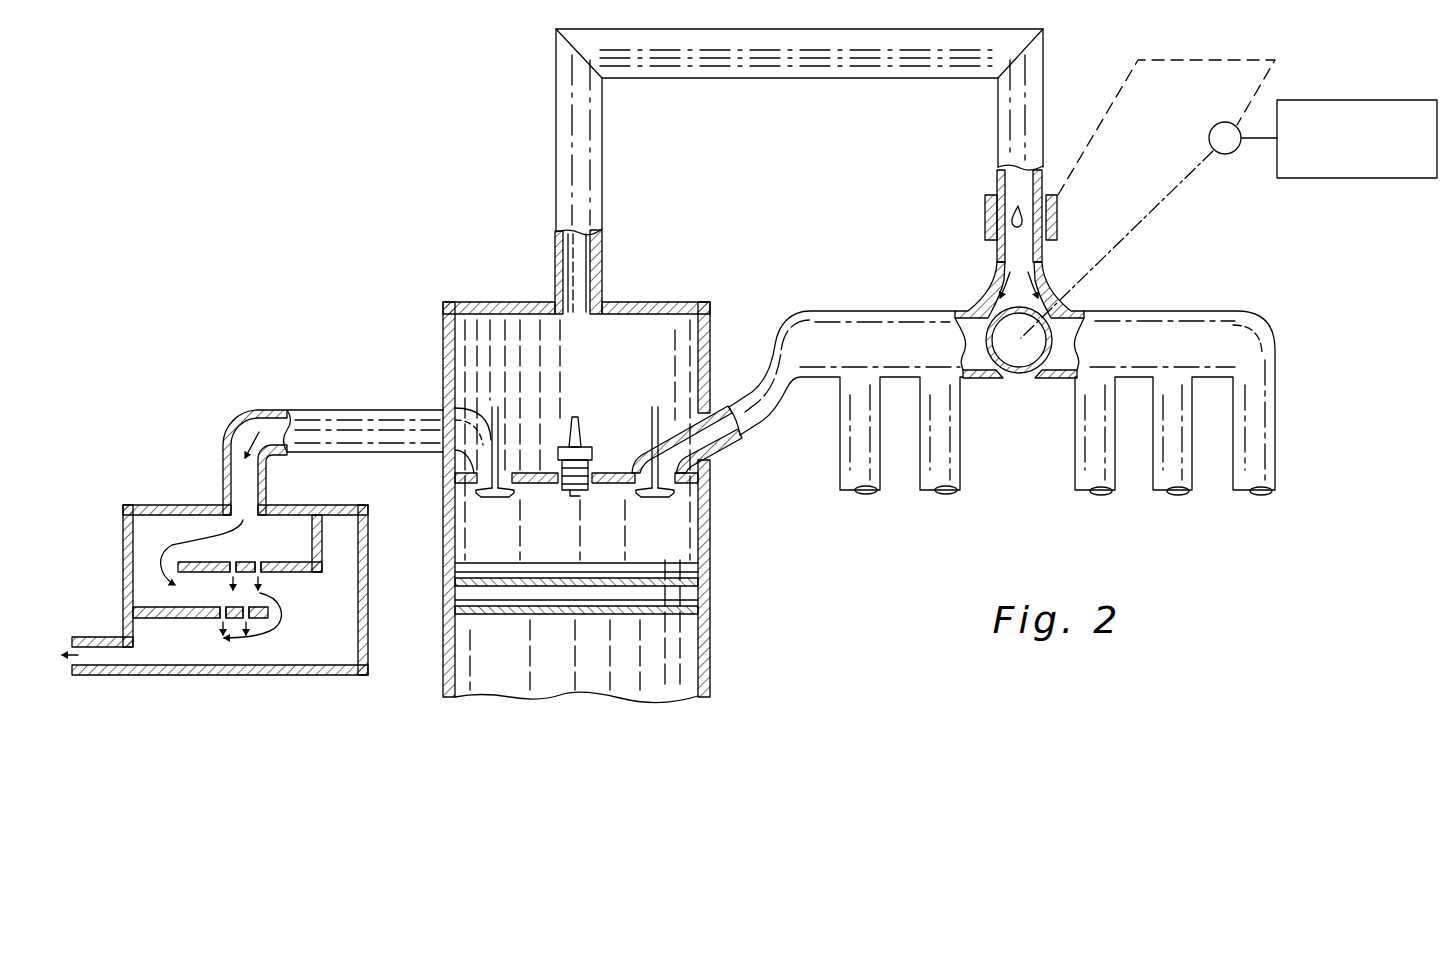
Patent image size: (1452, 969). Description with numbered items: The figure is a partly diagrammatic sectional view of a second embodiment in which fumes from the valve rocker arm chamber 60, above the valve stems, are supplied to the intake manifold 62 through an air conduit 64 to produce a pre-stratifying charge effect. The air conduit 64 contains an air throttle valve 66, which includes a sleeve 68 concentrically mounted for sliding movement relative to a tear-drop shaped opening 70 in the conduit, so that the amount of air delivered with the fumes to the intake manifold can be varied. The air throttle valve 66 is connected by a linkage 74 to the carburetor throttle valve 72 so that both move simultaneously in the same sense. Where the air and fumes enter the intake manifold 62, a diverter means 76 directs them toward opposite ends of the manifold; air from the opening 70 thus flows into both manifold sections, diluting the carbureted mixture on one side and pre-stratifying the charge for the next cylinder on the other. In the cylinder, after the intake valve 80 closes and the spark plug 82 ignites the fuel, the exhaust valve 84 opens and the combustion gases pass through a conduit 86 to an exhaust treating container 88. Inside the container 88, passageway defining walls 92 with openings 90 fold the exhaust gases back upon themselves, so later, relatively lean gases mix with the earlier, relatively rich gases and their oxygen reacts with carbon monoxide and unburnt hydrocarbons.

The valve rocker arm chamber 60 is at (575, 412).
The intake manifold 62 is at (1172, 315).
The air conduit 64 is at (783, 60).
The air throttle valve 66 is at (975, 181).
The sleeve 68 is at (1057, 208).
The tear-drop shaped opening 70 is at (1010, 218).
The carburetor throttle valve 72 is at (1222, 156).
The linkage 74 is at (1115, 95).
The diverter means 76 is at (984, 317).
The intake valve 80 is at (648, 498).
The spark plug 82 is at (583, 440).
The exhaust valve 84 is at (500, 498).
The conduit 86 is at (352, 410).
The exhaust treating container 88 is at (232, 676).
The openings 90 is at (234, 559).
The passageway defining walls 92 is at (316, 574).